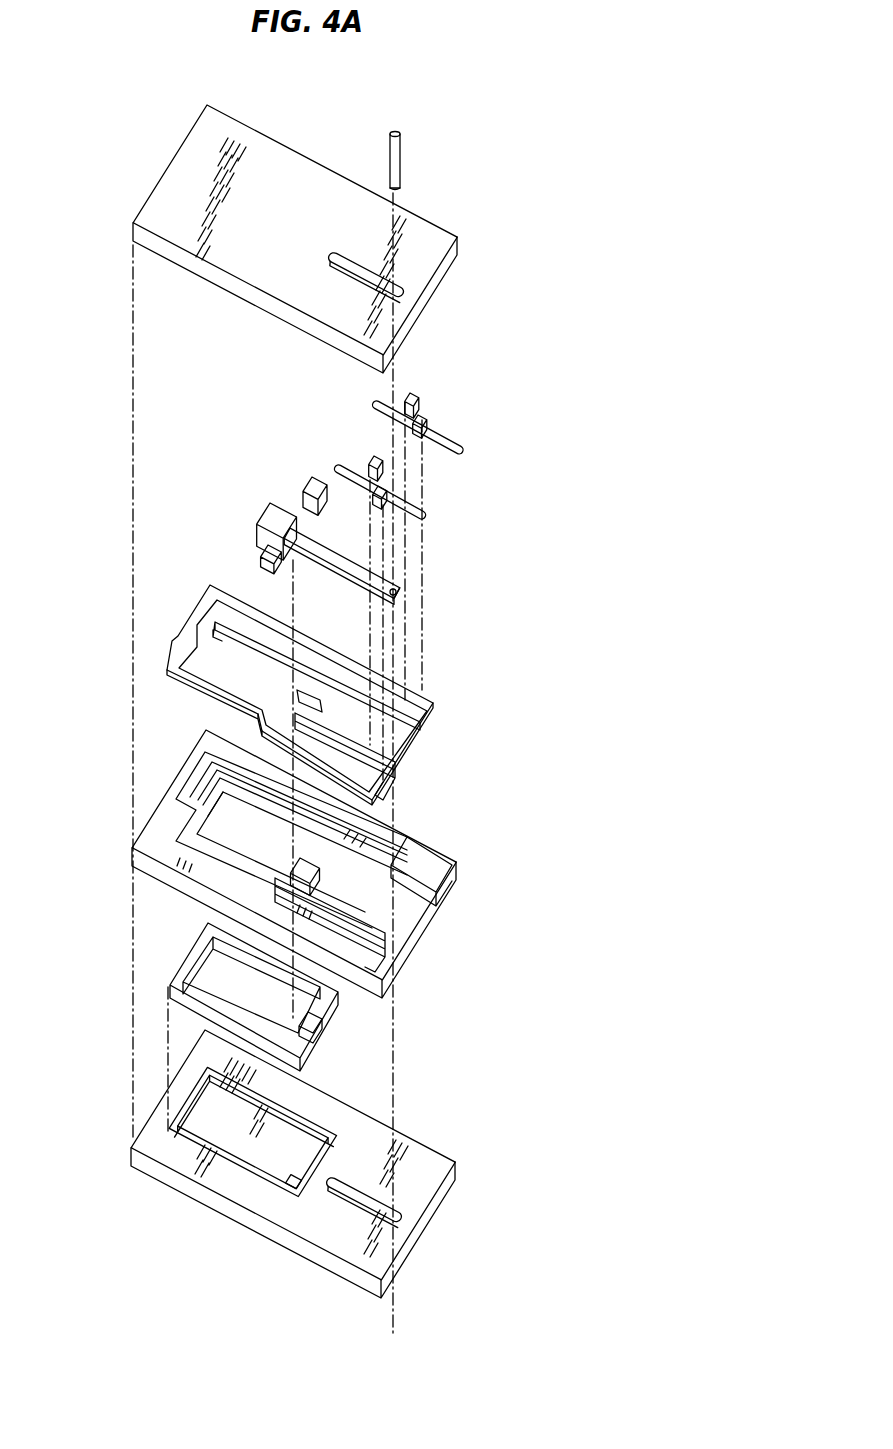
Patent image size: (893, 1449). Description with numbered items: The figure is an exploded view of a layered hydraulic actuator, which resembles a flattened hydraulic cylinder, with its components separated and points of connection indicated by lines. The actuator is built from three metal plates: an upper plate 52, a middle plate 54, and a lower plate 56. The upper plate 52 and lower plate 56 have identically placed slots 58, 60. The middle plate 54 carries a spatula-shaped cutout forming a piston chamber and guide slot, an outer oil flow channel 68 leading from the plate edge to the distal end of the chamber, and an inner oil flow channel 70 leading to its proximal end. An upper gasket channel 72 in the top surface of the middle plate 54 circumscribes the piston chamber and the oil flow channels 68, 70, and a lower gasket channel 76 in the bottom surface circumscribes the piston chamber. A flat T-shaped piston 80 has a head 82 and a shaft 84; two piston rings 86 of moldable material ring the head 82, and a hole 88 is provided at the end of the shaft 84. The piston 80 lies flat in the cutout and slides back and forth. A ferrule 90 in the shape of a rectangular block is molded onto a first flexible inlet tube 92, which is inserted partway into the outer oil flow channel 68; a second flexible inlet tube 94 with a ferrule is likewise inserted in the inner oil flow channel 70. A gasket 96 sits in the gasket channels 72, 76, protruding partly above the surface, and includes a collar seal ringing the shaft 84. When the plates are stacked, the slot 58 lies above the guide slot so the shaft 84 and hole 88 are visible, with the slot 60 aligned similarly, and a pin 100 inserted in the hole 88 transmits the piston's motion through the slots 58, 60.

The upper plate 52 is at (295, 229).
The slot 58 is at (342, 253).
The pin 100 is at (398, 163).
The first flexible inlet tube 92 is at (458, 445).
The second flexible inlet tube 94 is at (420, 503).
The ferrule 90 is at (428, 423).
The gasket 96 is at (420, 400).
The piston 80 is at (363, 538).
The head 82 is at (287, 510).
The shaft 84 is at (332, 580).
The piston rings 86 is at (260, 555).
The hole 88 is at (398, 588).
The middle plate 54 is at (268, 864).
The outer oil flow channel 68 is at (413, 857).
The inner oil flow channel 70 is at (313, 890).
The upper gasket channel 72 is at (273, 887).
The lower plate 56 is at (301, 1164).
The lower gasket channel 76 is at (187, 1147).
The slot 60 is at (333, 1180).